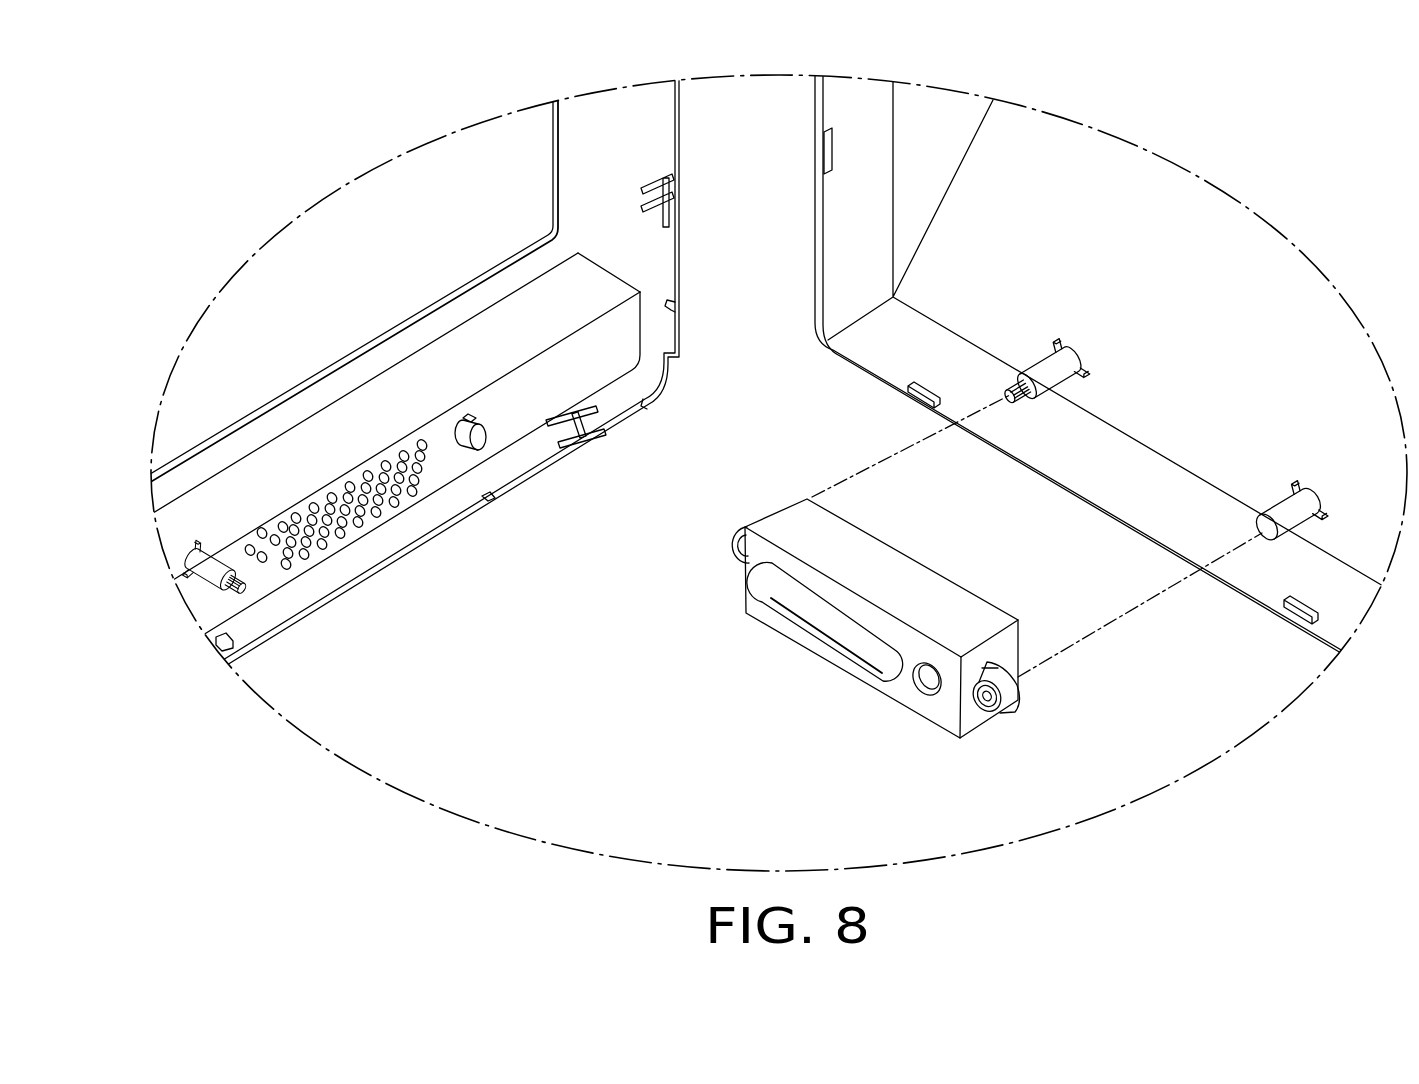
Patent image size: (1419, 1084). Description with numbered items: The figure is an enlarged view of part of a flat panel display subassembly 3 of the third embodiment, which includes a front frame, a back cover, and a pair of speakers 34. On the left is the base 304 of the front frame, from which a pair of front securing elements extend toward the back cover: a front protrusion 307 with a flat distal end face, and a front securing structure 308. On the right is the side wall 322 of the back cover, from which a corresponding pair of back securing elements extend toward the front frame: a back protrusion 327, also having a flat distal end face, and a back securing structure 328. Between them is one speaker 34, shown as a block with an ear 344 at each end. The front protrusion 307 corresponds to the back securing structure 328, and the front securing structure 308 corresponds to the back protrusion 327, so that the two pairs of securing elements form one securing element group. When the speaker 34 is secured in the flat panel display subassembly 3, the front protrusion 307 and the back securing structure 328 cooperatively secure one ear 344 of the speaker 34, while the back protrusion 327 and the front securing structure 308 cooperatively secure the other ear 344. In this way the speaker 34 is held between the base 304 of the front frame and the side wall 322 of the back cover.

The flat panel display subassembly 3 is at (342, 120).
The base 304 is at (512, 410).
The front protrusion 307 is at (480, 441).
The front securing structure 308 is at (250, 580).
The side wall 322 is at (1200, 262).
The back protrusion 327 is at (1258, 526).
The back securing structure 328 is at (1047, 373).
The speaker 34 is at (900, 692).
The ear 344 is at (1013, 699).